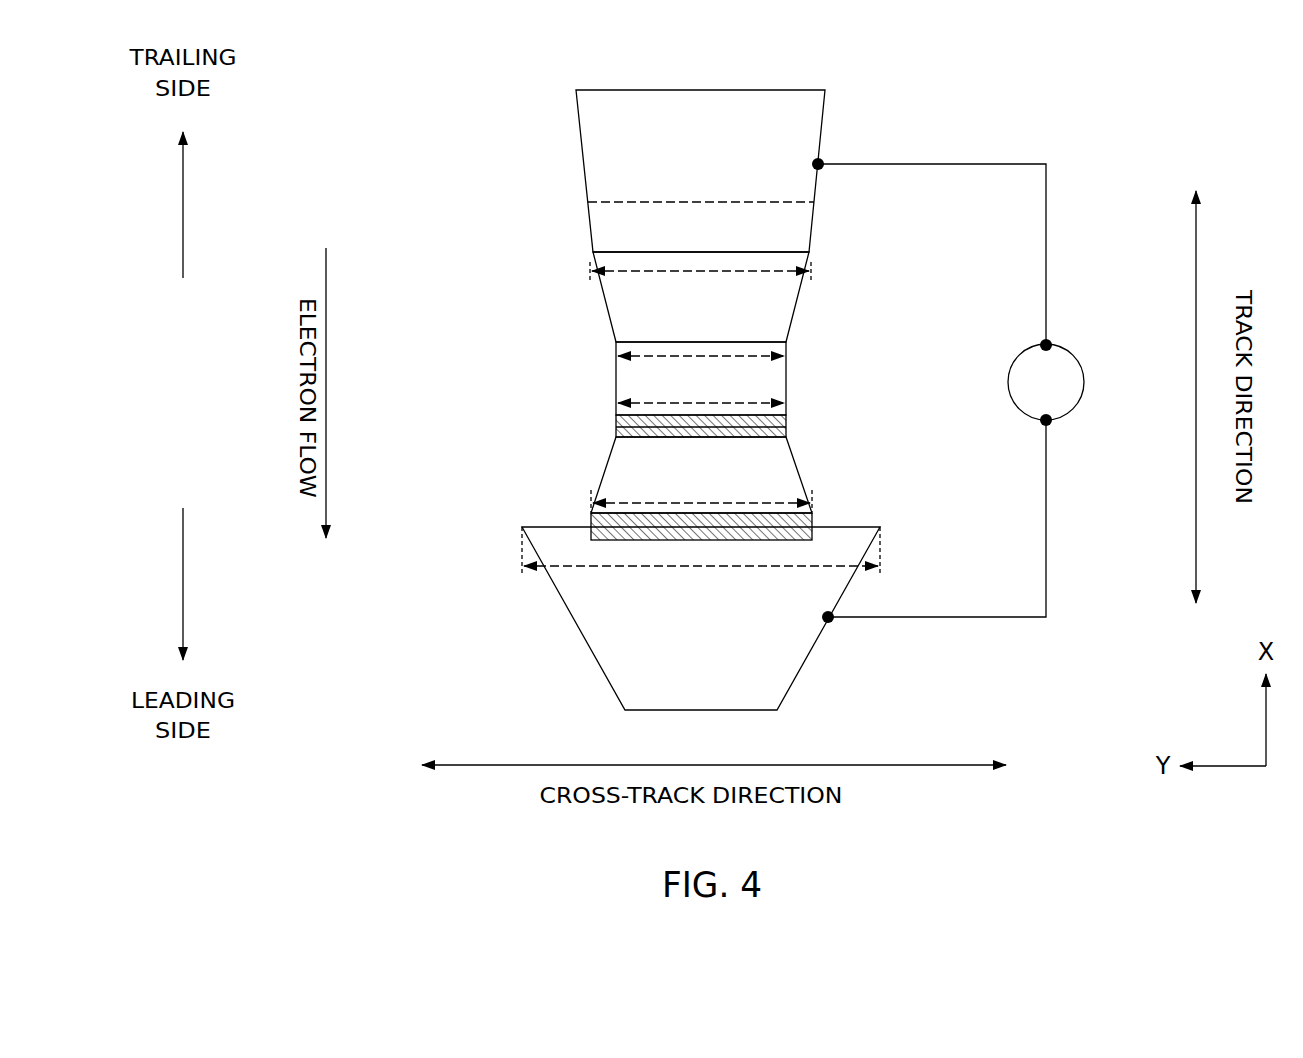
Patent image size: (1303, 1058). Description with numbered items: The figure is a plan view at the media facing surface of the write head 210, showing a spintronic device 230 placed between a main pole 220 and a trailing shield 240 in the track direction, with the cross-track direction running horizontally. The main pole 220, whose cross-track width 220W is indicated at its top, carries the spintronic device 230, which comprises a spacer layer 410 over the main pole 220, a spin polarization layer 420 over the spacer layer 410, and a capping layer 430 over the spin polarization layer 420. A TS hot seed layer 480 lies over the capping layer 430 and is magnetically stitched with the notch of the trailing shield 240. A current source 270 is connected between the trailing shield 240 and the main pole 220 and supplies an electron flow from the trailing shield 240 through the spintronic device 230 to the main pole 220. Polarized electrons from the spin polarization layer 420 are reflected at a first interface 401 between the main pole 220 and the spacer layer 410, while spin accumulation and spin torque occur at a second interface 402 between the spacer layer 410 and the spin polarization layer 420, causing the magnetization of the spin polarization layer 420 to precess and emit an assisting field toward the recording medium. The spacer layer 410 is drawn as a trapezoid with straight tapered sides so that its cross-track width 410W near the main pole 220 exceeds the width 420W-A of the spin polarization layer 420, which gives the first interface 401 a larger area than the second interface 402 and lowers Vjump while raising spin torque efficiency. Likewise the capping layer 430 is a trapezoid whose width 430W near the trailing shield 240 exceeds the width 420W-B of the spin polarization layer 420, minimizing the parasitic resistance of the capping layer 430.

The write head 210 is at (633, 623).
The main pole 220 is at (633, 618).
The cross-track width of the main pole 220W is at (588, 567).
The spintronic device 230 is at (703, 376).
The trailing shield (TS) 240 is at (658, 170).
The current source 270 is at (1075, 407).
The first interface 401 is at (808, 530).
The second interface 402 is at (787, 416).
The spacer layer 410 is at (641, 475).
The cross-track width of the spacer layer 410W is at (650, 503).
The spin polarization layer (SPL) 420 is at (602, 364).
The cross-track width of the SPL proximate the spacer layer 420W-A is at (673, 403).
The cross-track width of the SPL proximate the capping layer 420W-B is at (672, 355).
The capping layer 430 is at (631, 277).
The cross-track width of the capping layer 430W is at (657, 270).
The TS hot seed layer 480 is at (701, 220).